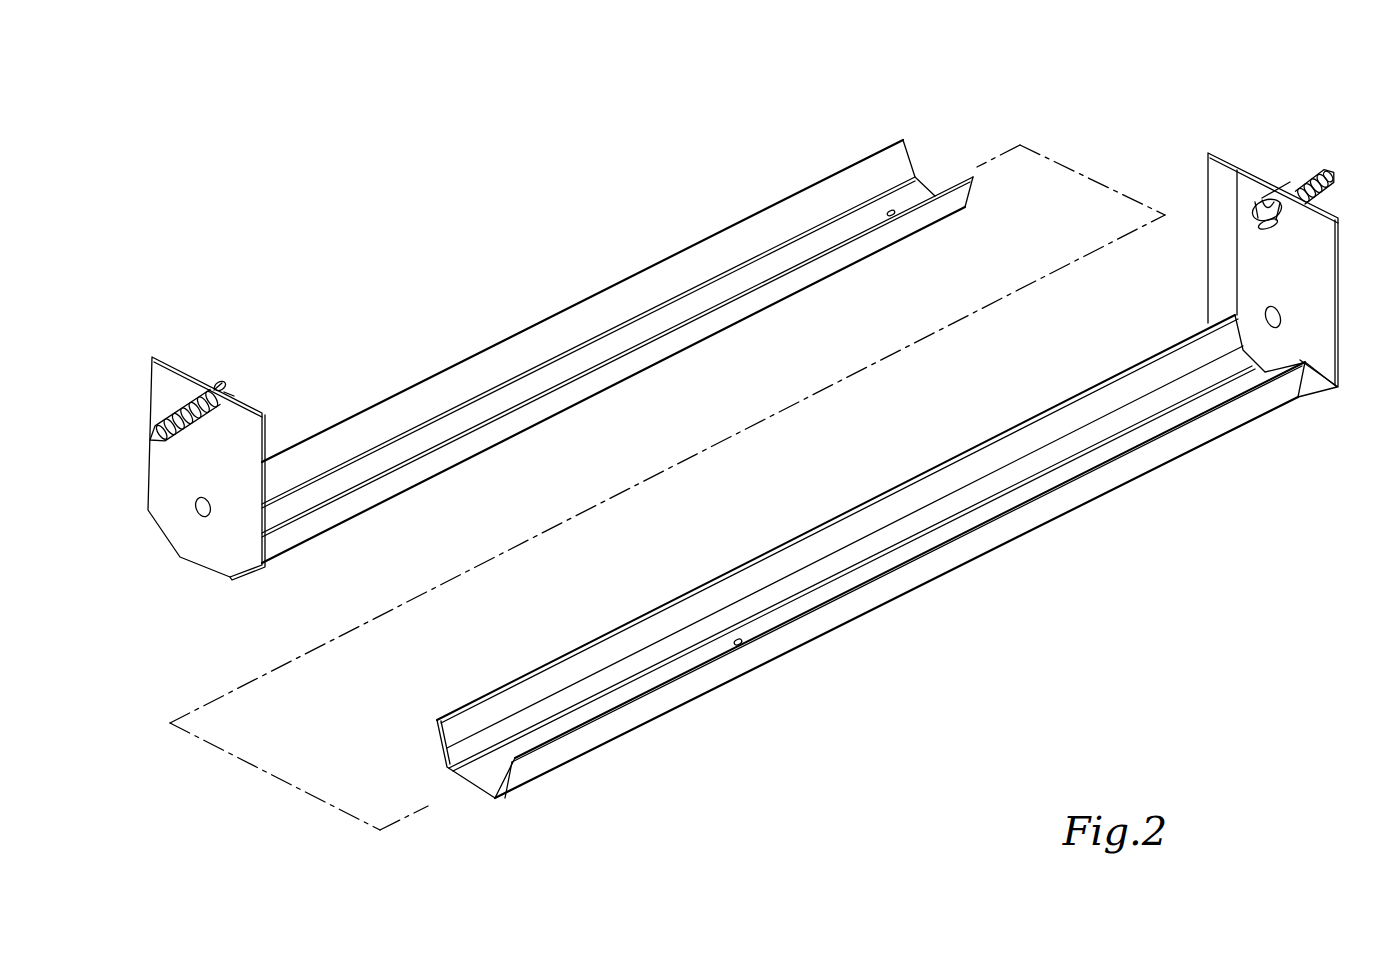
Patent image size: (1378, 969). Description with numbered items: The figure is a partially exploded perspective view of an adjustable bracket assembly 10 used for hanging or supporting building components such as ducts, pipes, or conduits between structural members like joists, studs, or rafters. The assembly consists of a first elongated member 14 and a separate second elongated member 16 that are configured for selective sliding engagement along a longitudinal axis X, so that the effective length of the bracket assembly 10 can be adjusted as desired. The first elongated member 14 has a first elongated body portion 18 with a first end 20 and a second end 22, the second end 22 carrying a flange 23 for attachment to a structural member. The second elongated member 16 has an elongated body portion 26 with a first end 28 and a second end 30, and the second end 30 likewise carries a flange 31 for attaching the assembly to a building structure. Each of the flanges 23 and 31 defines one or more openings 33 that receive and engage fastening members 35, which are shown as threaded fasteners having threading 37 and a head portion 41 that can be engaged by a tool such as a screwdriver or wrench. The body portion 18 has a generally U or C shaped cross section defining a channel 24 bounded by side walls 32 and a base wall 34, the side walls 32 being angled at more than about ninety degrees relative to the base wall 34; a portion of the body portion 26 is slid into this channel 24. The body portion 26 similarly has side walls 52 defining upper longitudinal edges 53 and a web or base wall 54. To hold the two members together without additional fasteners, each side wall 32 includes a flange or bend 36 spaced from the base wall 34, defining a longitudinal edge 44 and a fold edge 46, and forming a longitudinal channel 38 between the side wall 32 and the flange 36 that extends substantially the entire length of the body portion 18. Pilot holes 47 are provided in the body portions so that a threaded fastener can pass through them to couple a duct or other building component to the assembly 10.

The bracket assembly 10 is at (888, 108).
The first elongated member 14 is at (831, 594).
The second elongated member 16 is at (633, 397).
The first elongated body portion 18 is at (831, 594).
The first end 20 is at (508, 808).
The second end 22 is at (1249, 311).
The flange 23 is at (1254, 243).
The channel 24 is at (510, 748).
The elongated body portion 26 is at (570, 306).
The first end 28 is at (930, 150).
The second end 30 is at (746, 372).
The flange 31 is at (168, 406).
The side walls 32 is at (625, 672).
The openings 33 is at (210, 398).
The base wall 34 is at (444, 782).
The fastening members 35 is at (225, 388).
The flange 36 is at (795, 560).
The threading 37 is at (196, 403).
The longitudinal channel 38 is at (438, 736).
The head portion 41 is at (234, 395).
The longitudinal edge 44 is at (935, 500).
The fold edge 46 is at (1048, 410).
The pilot holes 47 is at (890, 210).
The side walls 52 is at (425, 400).
The upper longitudinal edges 53 is at (498, 343).
The base wall 54 is at (800, 253).
The longitudinal axis X is at (1031, 270).